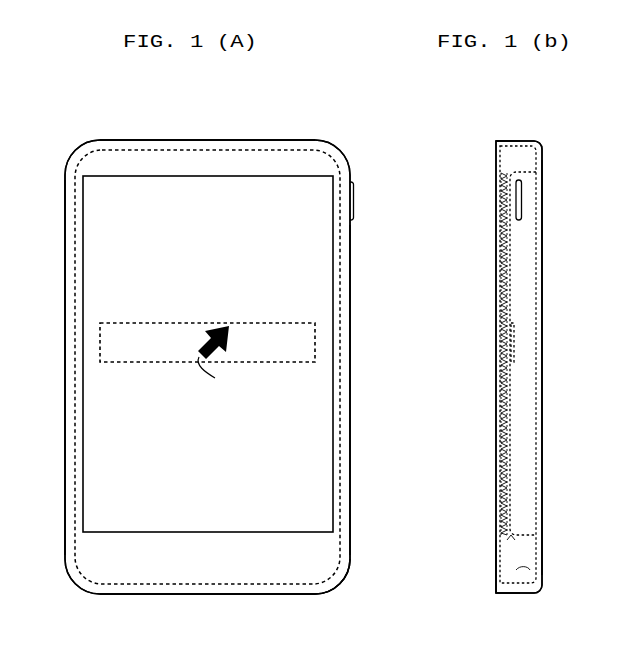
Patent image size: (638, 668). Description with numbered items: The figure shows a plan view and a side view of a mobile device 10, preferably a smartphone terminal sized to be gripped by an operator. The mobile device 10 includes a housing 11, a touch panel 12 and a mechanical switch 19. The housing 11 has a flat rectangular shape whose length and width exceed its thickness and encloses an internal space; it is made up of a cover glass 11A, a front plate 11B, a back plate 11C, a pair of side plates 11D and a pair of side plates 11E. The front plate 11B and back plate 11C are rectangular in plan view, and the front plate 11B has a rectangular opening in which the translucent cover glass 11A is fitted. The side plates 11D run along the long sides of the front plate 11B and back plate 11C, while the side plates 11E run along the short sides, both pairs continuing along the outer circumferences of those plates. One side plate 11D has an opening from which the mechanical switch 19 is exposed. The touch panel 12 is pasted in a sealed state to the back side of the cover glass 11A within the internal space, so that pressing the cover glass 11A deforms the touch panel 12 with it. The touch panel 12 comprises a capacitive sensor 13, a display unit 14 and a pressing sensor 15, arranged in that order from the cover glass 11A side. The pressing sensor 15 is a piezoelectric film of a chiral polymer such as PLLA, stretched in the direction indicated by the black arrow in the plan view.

In FIG. 1A, the mobile device 10 is at (69, 120).
In FIG. 1B, the mobile device 10 is at (545, 95).
In FIG. 1A, the housing 11 is at (332, 148).
In FIG. 1B, the housing 11 is at (538, 146).
In FIG. 1A, the cover glass 11A is at (80, 172).
In FIG. 1B, the cover glass 11A is at (500, 174).
In FIG. 1A, the front plate 11B is at (315, 569).
In FIG. 1B, the front plate 11B is at (496, 553).
In FIG. 1B, the back plate 11C is at (542, 285).
In FIG. 1A, the side plates 11D is at (70, 340).
In FIG. 1B, the side plates 11D is at (525, 572).
In FIG. 1A, the side plates 11E is at (228, 148).
In FIG. 1B, the side plates 11E is at (508, 141).
In FIG. 1B, the touch panel 12 is at (512, 556).
In FIG. 1B, the capacitive sensor 13 is at (515, 165).
In FIG. 1B, the display unit 14 is at (535, 172).
In FIG. 1A, the pressing sensor 15 is at (118, 322).
In FIG. 1B, the pressing sensor 15 is at (515, 322).
In FIG. 1A, the mechanical switch 19 is at (354, 200).
In FIG. 1B, the mechanical switch 19 is at (523, 206).